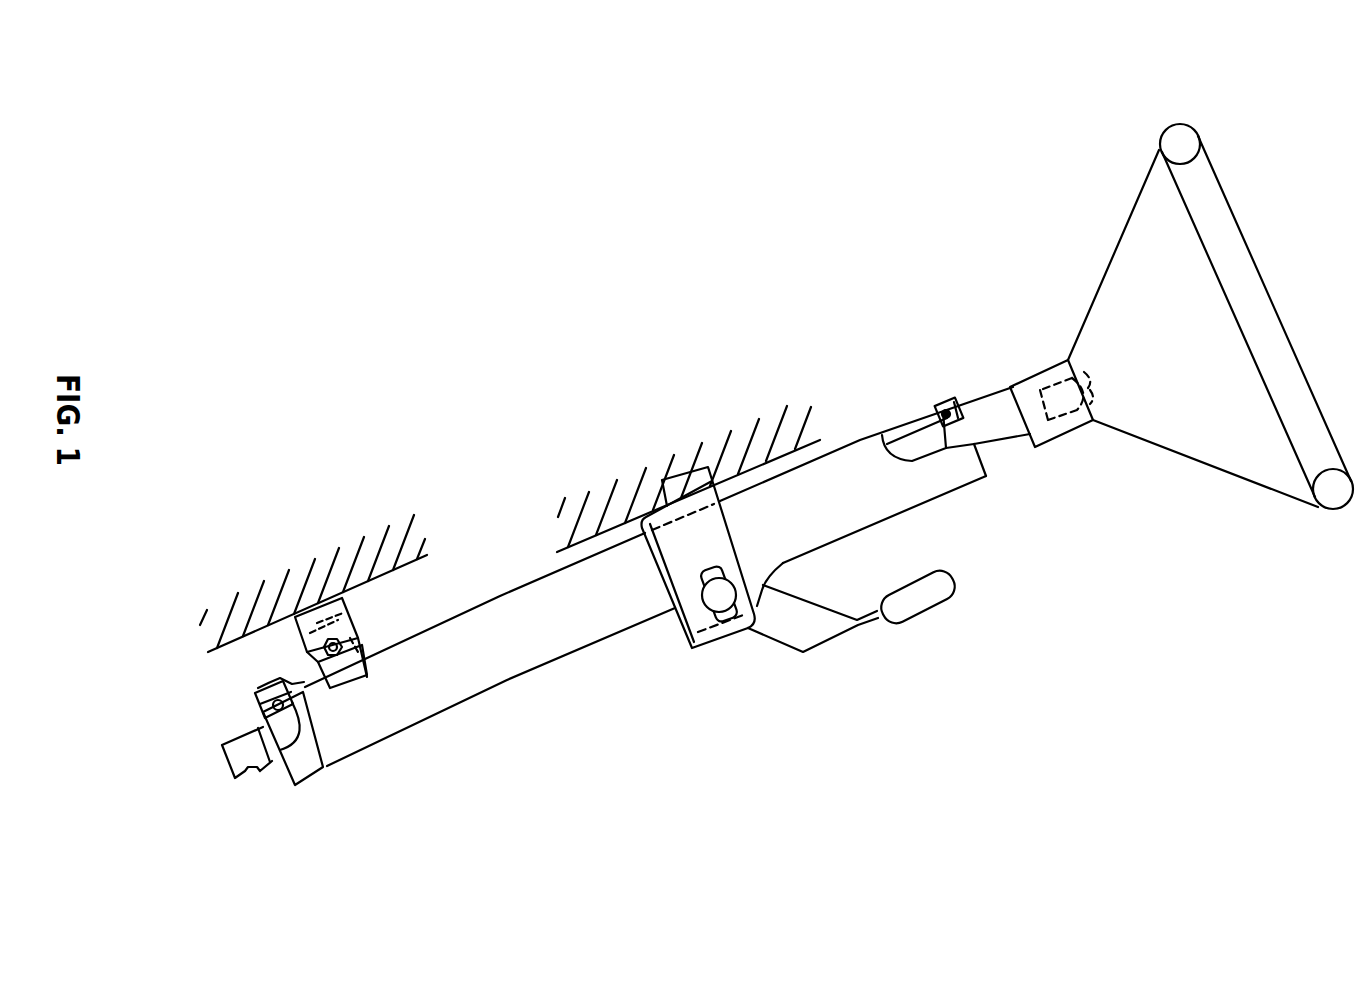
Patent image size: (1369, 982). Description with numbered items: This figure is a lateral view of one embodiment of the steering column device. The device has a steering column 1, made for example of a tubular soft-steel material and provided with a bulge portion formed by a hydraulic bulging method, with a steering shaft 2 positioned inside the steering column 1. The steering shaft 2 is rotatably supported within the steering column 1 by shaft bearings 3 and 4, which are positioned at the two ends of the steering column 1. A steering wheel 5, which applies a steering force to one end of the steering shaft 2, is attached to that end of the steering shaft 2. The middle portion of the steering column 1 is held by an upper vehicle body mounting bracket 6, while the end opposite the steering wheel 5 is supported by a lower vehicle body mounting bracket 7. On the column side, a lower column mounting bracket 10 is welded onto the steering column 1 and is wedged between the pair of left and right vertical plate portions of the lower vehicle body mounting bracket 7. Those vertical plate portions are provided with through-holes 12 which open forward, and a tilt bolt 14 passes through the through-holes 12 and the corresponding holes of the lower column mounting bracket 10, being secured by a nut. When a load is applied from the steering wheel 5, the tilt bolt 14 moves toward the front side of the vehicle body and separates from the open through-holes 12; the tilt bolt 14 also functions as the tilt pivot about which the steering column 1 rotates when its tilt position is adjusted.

The steering column 1 is at (855, 453).
The steering shaft 2 is at (990, 415).
The shaft bearing 3 is at (947, 410).
The shaft bearing 4 is at (256, 690).
The steering wheel 5 is at (1166, 146).
The upper vehicle body mounting bracket 6 is at (658, 582).
The lower vehicle body mounting bracket 7 is at (318, 603).
The lower column mounting bracket 10 is at (348, 677).
The through-hole 12 is at (312, 655).
The tilt bolt 14 is at (367, 627).